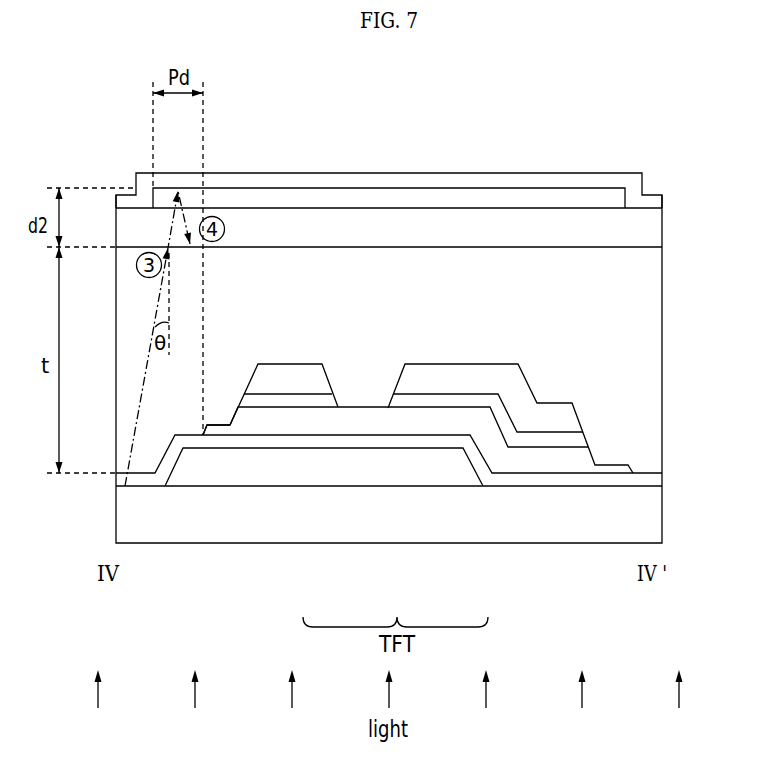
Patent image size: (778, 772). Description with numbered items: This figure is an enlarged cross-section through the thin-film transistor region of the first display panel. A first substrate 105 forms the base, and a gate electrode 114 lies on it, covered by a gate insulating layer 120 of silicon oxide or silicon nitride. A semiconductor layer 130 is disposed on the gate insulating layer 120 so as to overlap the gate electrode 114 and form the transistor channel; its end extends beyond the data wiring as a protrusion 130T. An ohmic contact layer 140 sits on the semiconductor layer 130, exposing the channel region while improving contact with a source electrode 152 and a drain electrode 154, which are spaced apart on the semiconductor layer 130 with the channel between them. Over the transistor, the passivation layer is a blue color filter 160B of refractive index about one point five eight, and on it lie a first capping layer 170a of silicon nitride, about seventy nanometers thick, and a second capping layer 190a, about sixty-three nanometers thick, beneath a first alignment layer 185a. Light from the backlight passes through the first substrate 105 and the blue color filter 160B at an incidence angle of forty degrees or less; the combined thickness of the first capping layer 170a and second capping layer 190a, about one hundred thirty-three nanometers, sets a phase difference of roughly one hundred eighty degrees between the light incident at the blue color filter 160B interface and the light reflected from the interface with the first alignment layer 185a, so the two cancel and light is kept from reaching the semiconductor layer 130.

The first substrate 105 is at (655, 513).
The gate electrode 114 is at (372, 475).
The gate insulating layer 120 is at (655, 480).
The semiconductor layer 130 is at (430, 427).
The protrusion 130T is at (217, 430).
The ohmic contact layer 140 is at (282, 402).
The source electrode 152 is at (315, 383).
The drain electrode 154 is at (471, 386).
The blue color filter 160B is at (655, 350).
The first capping layer 170a is at (653, 223).
The first alignment layer 185a is at (635, 182).
The second capping layer 190a is at (573, 197).